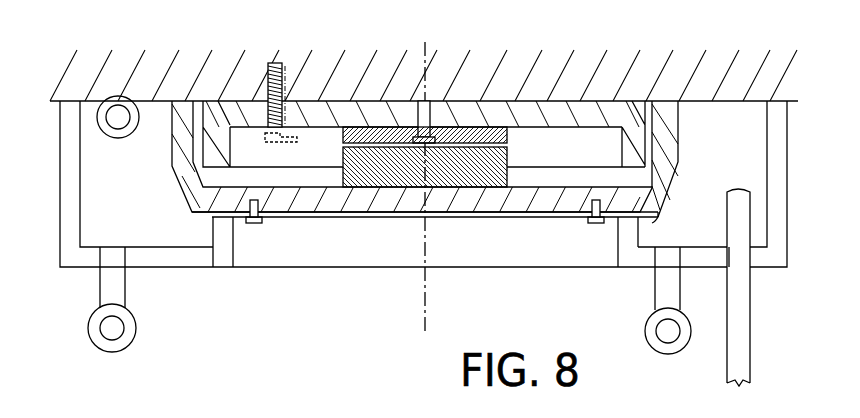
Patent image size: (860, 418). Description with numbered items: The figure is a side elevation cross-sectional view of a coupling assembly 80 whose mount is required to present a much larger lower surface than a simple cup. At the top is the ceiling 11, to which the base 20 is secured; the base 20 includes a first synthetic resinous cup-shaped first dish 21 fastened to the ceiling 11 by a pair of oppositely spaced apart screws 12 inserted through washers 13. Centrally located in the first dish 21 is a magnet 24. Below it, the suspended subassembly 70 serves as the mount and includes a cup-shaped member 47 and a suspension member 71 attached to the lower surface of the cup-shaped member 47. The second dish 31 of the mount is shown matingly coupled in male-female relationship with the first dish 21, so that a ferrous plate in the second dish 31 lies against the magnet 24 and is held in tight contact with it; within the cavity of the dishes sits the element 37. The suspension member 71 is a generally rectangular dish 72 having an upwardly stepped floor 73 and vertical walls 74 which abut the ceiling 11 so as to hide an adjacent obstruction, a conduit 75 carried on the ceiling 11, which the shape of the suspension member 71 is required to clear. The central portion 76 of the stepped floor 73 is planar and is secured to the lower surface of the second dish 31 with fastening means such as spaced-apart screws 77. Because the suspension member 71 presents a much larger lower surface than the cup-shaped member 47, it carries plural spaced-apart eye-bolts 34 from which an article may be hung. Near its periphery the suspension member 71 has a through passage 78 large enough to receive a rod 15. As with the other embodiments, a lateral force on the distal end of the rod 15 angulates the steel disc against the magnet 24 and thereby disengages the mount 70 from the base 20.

The ceiling 11 is at (150, 80).
The screw 12 is at (284, 80).
The washer 13 is at (262, 134).
The rod 15 is at (750, 357).
The base 20 is at (612, 150).
The first dish 21 is at (528, 128).
The magnet 24 is at (513, 113).
The second dish 31 is at (658, 217).
The eye-bolt 34 is at (97, 350).
The magnet assembly 37 is at (343, 160).
The cup-shaped member 47 is at (162, 150).
The suspended subassembly 70 is at (45, 228).
The suspension member 71 is at (60, 249).
The rectangular dish 72 is at (788, 247).
The stepped floor 73 is at (183, 247).
The vertical walls 74 is at (762, 137).
The conduit 75 is at (110, 138).
The central portion 76 is at (520, 215).
The screw 77 is at (265, 224).
The through passage 78 is at (727, 270).
The assembly 80 is at (212, 272).